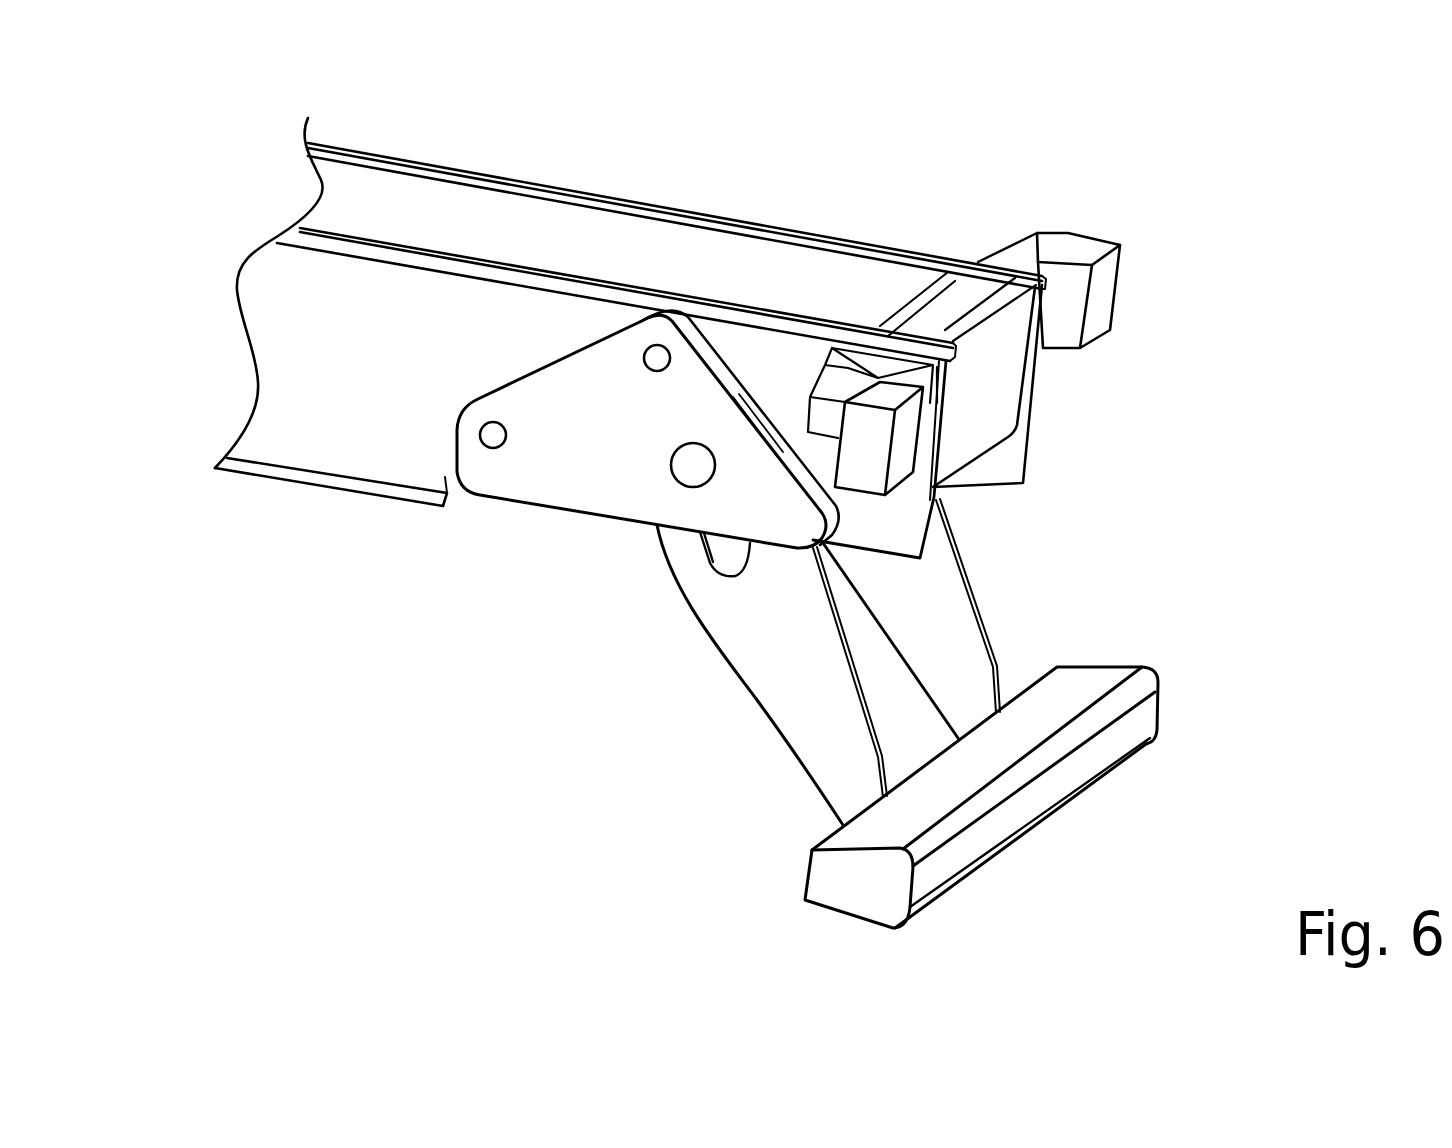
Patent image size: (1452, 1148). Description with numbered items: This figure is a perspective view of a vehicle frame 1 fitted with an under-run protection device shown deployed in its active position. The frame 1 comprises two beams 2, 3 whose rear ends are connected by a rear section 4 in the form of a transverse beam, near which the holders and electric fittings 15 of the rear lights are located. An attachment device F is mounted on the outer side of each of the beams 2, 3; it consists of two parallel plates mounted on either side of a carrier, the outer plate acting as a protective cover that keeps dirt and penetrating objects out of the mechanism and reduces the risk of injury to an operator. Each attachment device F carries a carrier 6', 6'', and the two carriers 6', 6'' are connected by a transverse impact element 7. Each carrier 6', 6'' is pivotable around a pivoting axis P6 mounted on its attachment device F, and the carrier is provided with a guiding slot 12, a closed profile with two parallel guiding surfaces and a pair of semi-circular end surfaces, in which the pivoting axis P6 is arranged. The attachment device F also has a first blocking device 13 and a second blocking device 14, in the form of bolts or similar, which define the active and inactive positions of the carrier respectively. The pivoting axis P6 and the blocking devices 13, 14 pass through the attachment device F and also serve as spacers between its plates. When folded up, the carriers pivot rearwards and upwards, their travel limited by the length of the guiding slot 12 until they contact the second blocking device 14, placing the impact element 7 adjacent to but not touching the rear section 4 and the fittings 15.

The frame 1 is at (232, 183).
The beam 2 is at (322, 452).
The beam 3 is at (377, 162).
The rear section 4 is at (995, 393).
The holders and electric fittings of the rear lights 15 is at (1025, 255).
The attachment device F is at (548, 364).
The second blocking device 14 is at (480, 436).
The first blocking device 13 is at (645, 360).
The guiding slot 12 is at (718, 577).
The pivoting axis P6 is at (671, 465).
The carrier 6' is at (765, 680).
The carrier 6'' is at (1036, 600).
The impact element 7 is at (1095, 755).